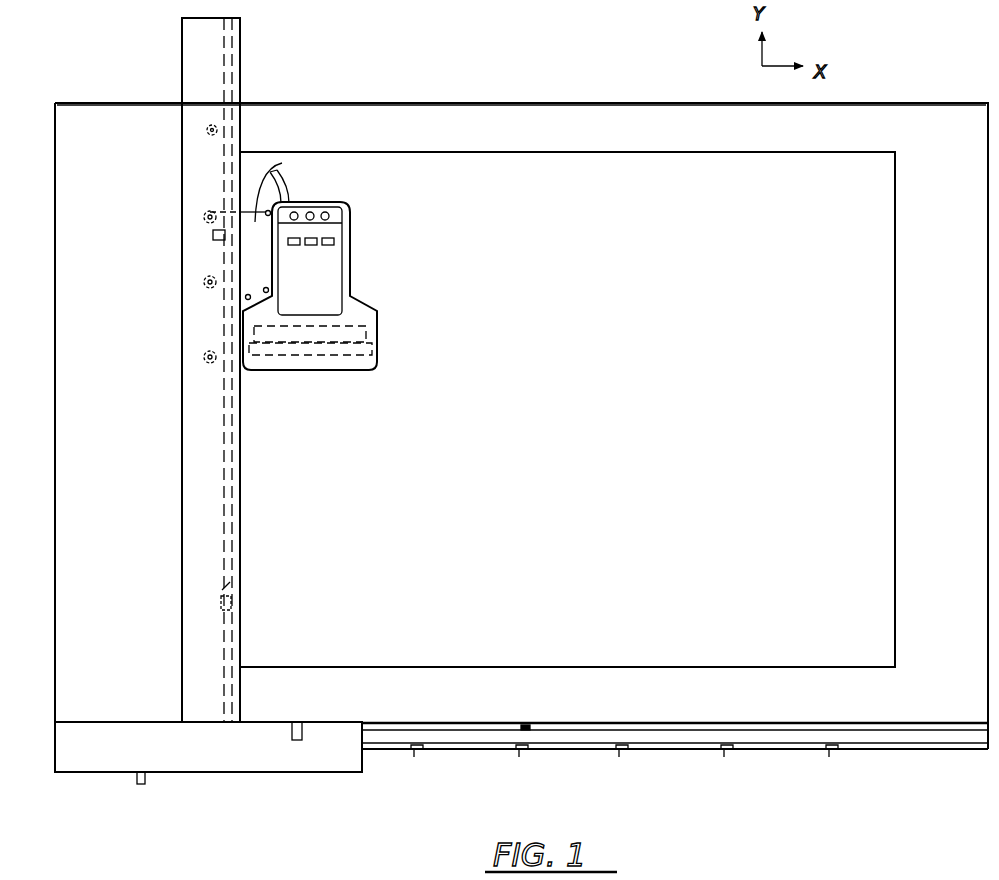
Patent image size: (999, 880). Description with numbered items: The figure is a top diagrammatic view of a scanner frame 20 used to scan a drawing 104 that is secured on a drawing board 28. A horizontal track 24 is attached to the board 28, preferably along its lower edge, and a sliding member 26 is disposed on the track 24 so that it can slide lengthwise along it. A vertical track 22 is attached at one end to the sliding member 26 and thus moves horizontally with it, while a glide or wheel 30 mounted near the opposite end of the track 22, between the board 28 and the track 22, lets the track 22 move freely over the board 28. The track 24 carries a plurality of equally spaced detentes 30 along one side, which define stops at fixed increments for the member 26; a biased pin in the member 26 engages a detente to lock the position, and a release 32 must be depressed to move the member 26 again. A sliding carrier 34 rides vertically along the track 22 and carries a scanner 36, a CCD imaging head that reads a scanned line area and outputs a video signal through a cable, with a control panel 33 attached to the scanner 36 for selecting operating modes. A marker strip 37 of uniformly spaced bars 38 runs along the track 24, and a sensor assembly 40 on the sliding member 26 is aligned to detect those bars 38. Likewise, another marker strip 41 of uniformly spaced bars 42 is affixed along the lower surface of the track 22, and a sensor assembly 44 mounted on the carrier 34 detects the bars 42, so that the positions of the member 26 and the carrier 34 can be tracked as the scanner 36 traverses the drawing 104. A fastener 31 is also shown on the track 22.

The scanner frame 20 is at (507, 86).
The vertical track 22 is at (195, 482).
The horizontal track 24 is at (387, 740).
The sliding member 26 is at (310, 772).
The drawing board 28 is at (338, 118).
The detentes 30 is at (600, 775).
The fastener 31 is at (208, 126).
The release 32 is at (140, 784).
The control panel 33 is at (338, 262).
The sliding carrier 34 is at (287, 187).
The scanner 36 is at (358, 318).
The marker strip 37 is at (452, 730).
The bars 38 is at (530, 727).
The sensor assembly 40 is at (296, 742).
The marker strip 41 is at (228, 412).
The bars 42 is at (230, 588).
The sensor assembly 44 is at (213, 235).
The drawing 104 is at (887, 420).